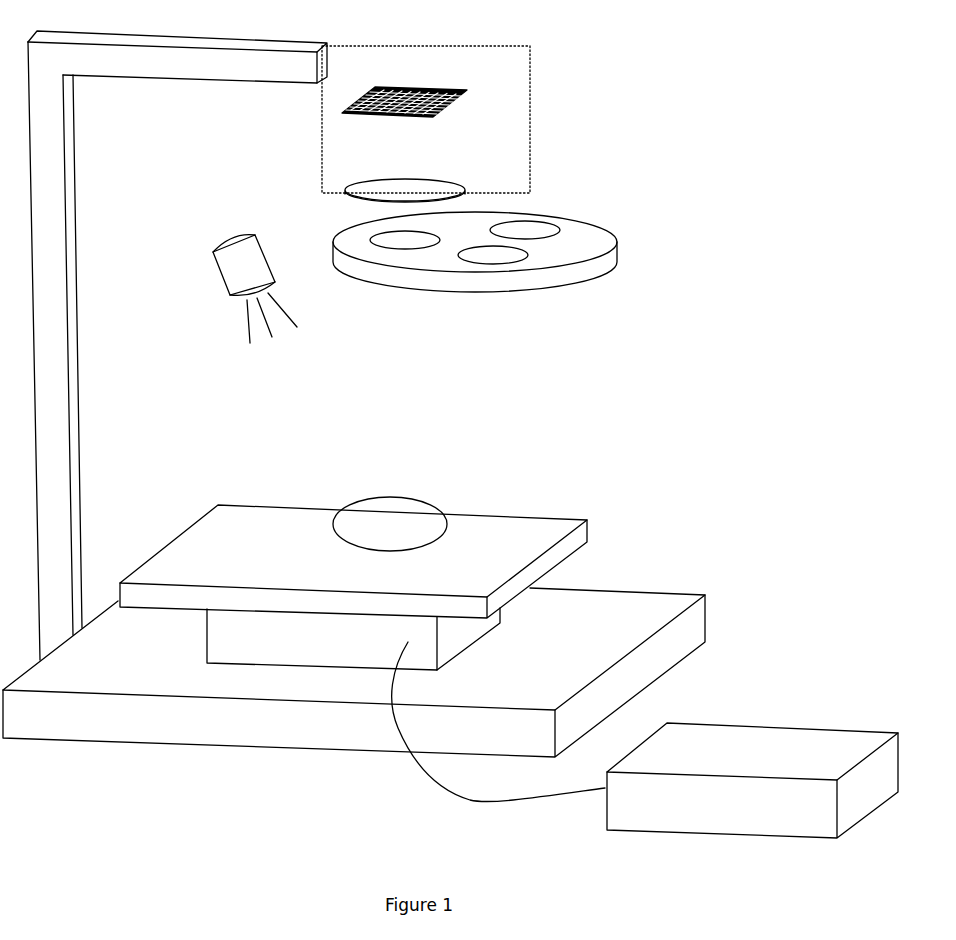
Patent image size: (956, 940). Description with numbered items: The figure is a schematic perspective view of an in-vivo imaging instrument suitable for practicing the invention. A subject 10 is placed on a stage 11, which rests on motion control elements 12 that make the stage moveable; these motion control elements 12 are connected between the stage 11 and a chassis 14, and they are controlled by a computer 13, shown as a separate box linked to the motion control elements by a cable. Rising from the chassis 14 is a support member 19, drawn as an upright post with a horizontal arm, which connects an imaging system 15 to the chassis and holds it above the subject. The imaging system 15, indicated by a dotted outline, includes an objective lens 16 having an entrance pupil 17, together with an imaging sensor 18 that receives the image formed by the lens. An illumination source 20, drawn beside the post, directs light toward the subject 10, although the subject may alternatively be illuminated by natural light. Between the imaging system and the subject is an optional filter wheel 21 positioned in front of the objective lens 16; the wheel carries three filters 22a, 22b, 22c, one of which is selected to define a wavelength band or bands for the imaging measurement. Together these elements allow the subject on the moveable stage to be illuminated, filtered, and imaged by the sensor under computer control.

The subject 10 is at (357, 497).
The stage 11 is at (588, 548).
The motion control elements 12 is at (207, 640).
The computer 13 is at (628, 833).
The chassis 14 is at (82, 747).
The imaging system 15 is at (529, 83).
The objective lens 16 is at (428, 179).
The entrance pupil 17 is at (377, 193).
The imaging sensor 18 is at (455, 101).
The support member 19 is at (168, 82).
The illumination source 20 is at (208, 283).
The filter wheel 21 is at (486, 253).
The filter 22a is at (405, 249).
The filter 22b is at (528, 253).
The filter 22c is at (548, 224).